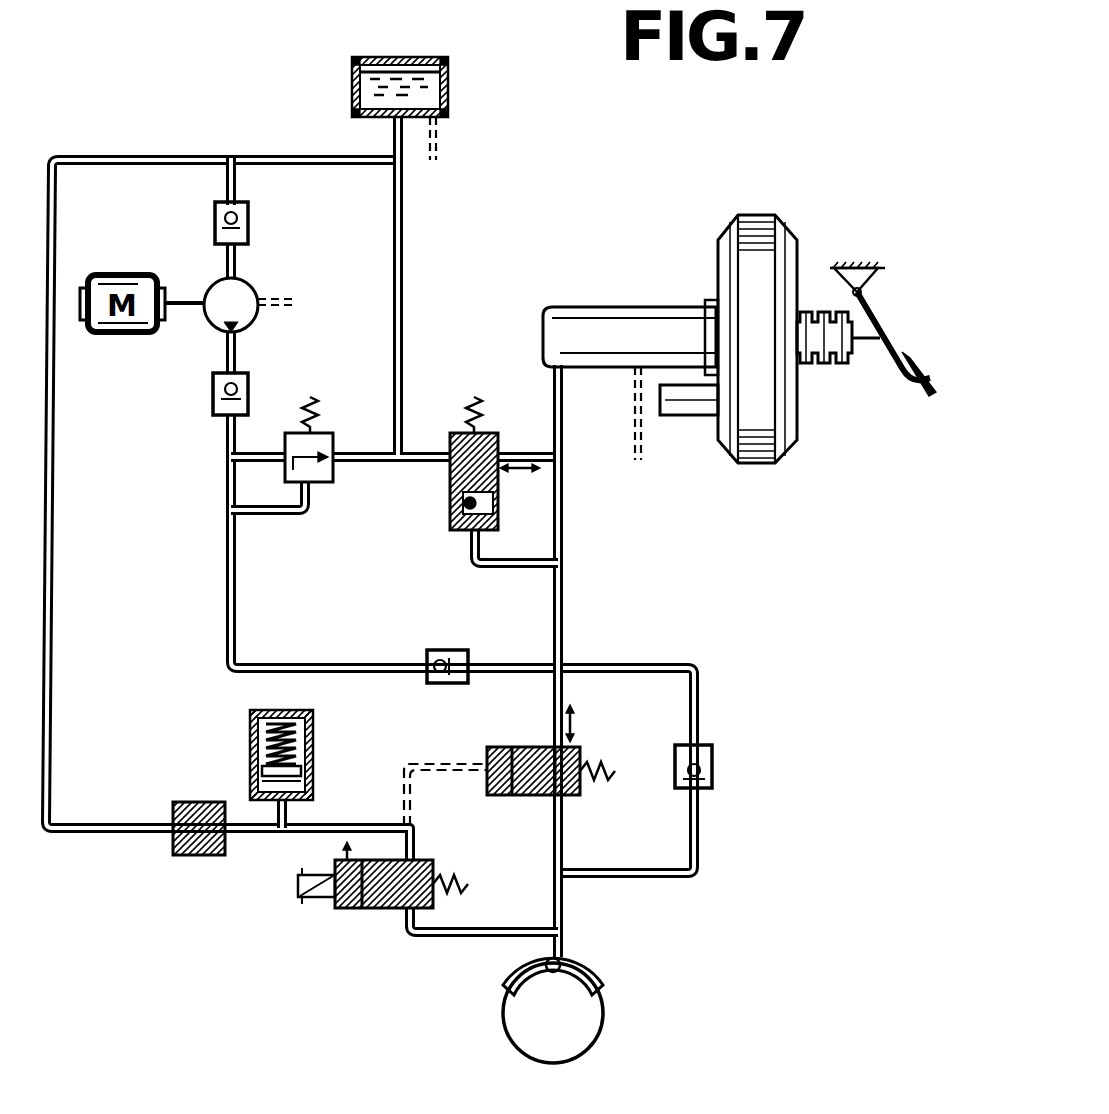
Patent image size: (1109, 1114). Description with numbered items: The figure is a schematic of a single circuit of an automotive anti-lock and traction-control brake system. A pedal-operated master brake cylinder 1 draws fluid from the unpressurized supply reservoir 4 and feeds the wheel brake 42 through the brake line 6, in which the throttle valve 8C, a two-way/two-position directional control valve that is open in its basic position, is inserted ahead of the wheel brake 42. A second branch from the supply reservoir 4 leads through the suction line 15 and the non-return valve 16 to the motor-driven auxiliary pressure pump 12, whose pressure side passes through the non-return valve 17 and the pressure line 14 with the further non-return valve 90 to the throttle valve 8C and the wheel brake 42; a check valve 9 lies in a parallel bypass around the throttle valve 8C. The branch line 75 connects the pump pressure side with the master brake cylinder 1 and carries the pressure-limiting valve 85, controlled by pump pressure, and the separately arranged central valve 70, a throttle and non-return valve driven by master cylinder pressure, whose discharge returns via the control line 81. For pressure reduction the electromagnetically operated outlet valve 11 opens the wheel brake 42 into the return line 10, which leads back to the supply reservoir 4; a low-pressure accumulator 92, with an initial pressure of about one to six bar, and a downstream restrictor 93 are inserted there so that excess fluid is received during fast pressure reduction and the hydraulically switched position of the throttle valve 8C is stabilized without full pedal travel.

The master brake cylinder 1 is at (628, 308).
The supply reservoir 4 is at (448, 78).
The brake line 6 is at (568, 524).
The throttle valve 8C is at (570, 797).
The check valve 9 is at (712, 780).
The return line 10 is at (118, 835).
The outlet valve 11 is at (372, 910).
The pump 12 is at (250, 320).
The pressure line 14 is at (355, 664).
The suction line 15 is at (236, 180).
The non-return valve 16 is at (248, 224).
The non-return valve 17 is at (212, 394).
The wheel brake 42 is at (560, 962).
The central valve 70 is at (450, 490).
The branch line 75 is at (411, 455).
The control line 81 is at (523, 570).
The pressure-limiting valve 85 is at (326, 482).
The non-return valve 90 is at (470, 655).
The low-pressure accumulator 92 is at (314, 728).
The restrictor 93 is at (195, 801).